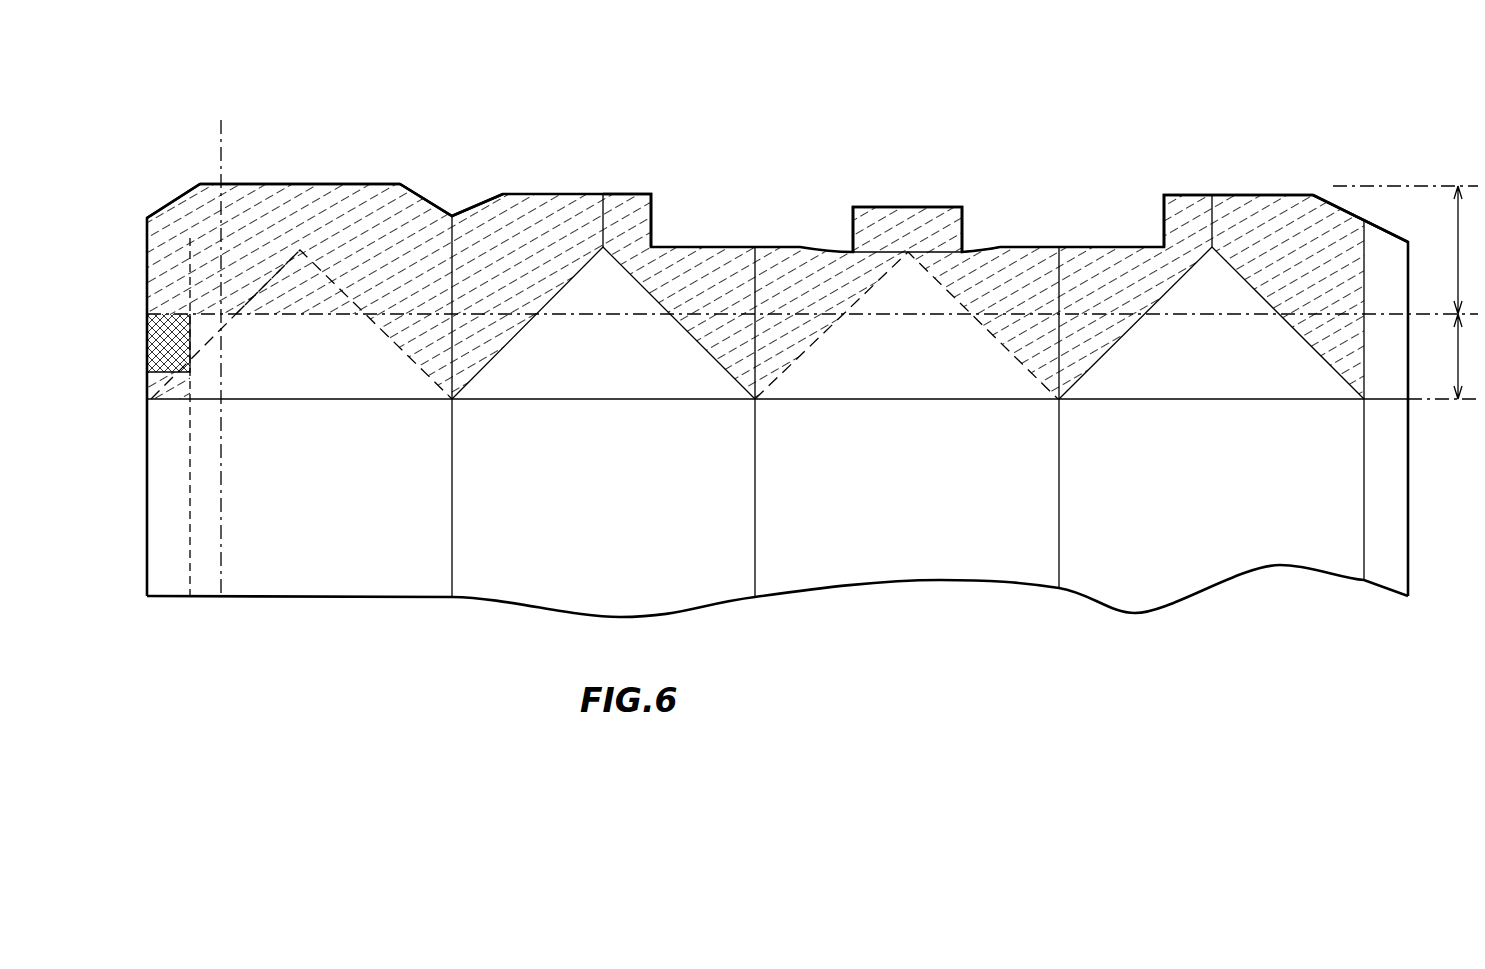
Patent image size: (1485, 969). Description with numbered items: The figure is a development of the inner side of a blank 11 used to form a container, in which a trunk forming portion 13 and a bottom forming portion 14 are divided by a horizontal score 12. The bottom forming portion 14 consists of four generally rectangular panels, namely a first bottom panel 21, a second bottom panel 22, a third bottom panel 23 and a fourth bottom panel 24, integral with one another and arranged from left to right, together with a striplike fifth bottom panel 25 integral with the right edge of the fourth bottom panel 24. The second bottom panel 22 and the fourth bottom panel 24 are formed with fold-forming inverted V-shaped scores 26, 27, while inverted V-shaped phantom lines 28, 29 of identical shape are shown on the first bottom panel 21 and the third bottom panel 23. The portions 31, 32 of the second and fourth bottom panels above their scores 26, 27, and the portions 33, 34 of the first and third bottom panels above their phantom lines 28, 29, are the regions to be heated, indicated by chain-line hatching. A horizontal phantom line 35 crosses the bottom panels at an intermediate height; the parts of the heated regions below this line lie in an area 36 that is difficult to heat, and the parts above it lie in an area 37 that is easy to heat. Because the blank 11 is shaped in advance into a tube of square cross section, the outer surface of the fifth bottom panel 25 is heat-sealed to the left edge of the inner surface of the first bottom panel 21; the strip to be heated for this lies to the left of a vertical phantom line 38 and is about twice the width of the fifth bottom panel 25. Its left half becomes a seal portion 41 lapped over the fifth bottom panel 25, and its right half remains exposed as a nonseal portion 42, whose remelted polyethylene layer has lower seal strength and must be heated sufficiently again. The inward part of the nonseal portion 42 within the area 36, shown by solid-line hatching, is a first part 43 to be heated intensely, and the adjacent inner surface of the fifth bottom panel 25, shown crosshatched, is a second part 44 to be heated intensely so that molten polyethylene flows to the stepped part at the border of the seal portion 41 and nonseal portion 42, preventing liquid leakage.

The blank 11 is at (884, 613).
The horizontal score 12 is at (560, 400).
The trunk forming portion 13 is at (1390, 513).
The bottom forming portion 14 is at (1079, 233).
The first bottom panel 21 is at (318, 192).
The second bottom panel 22 is at (620, 194).
The third bottom panel 23 is at (880, 207).
The fourth bottom panel 24 is at (1227, 195).
The fifth bottom panel 25 is at (1385, 265).
The inverted V-shaped score 26 is at (718, 362).
The inverted V-shaped score 27 is at (1337, 363).
The inverted V-shaped phantom line 28 is at (390, 378).
The inverted V-shaped phantom line 29 is at (1025, 363).
The portion to be heated 31 is at (690, 270).
The portion to be heated 32 is at (1285, 250).
The portion to be heated 33 is at (372, 250).
The portion to be heated 34 is at (990, 285).
The horizontal phantom line 35 is at (1210, 320).
The area difficult to heat 36 is at (812, 356).
The area easy to heat 37 is at (1405, 250).
The vertical phantom line 38 is at (221, 148).
The seal portion 41 is at (173, 247).
The nonseal portion 42 is at (212, 283).
The first part to be heated intensely 43 is at (200, 332).
The second part to be heated intensely 44 is at (160, 372).